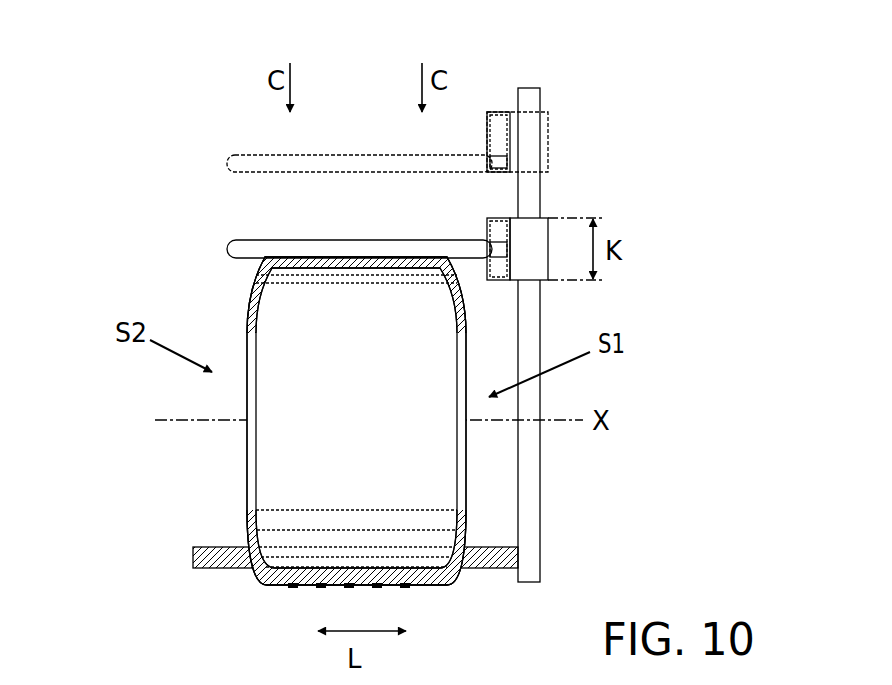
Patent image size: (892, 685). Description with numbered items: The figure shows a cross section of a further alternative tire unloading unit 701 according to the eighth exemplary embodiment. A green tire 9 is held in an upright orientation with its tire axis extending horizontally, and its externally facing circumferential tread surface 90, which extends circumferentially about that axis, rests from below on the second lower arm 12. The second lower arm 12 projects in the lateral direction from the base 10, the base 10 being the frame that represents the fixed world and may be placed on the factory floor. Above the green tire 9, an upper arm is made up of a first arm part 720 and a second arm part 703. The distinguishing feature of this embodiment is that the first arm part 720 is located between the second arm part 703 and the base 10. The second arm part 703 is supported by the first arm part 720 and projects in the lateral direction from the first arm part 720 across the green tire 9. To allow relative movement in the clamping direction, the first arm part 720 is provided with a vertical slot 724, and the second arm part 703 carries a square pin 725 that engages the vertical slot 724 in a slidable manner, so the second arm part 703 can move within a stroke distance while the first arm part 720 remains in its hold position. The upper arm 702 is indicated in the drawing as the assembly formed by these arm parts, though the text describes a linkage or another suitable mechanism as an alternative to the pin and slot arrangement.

The green tire 9 is at (265, 465).
The base 10 is at (530, 190).
The second lower arm 12 is at (474, 569).
The tread surface 90 is at (284, 588).
The tire unloading unit 701 is at (155, 122).
The arm assembly 702 is at (330, 99).
The second arm part 703 is at (233, 163).
The first arm part 720 is at (500, 111).
The vertical slot 724 is at (493, 235).
The square pin 725 is at (493, 252).